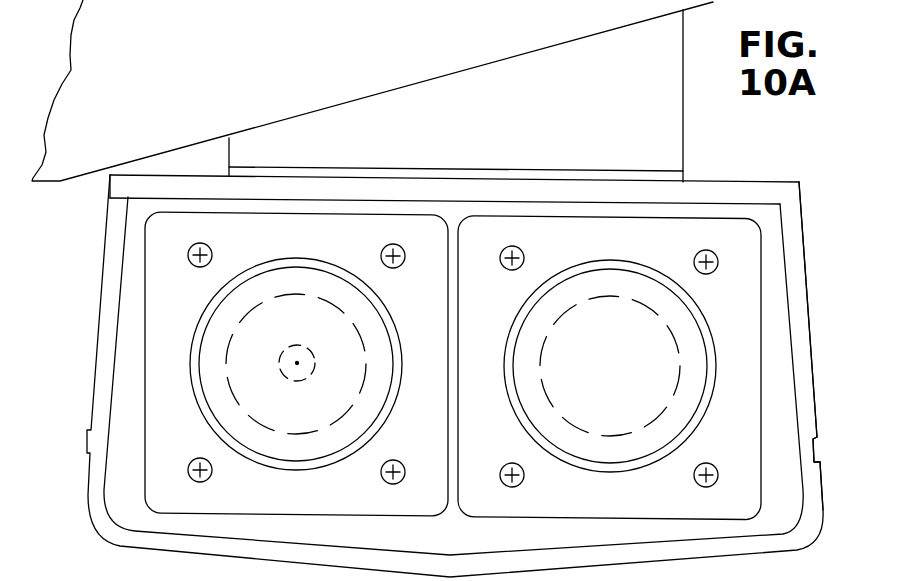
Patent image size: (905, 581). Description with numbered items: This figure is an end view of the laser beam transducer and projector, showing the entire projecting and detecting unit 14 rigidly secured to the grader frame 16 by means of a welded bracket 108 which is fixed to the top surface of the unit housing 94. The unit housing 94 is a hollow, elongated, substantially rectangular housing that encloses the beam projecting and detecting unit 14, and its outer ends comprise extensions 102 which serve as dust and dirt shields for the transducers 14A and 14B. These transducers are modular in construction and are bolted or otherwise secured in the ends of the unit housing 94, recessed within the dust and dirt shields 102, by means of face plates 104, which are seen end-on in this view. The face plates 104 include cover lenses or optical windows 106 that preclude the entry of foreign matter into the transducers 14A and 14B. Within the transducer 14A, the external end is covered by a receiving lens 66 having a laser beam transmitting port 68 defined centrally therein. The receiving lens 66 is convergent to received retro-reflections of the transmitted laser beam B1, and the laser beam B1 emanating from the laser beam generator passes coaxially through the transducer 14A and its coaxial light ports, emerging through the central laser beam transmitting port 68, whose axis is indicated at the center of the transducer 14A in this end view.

The grader frame 16 is at (330, 50).
The welded bracket 108 is at (475, 140).
The unit housing 94 is at (806, 265).
The projecting and detecting unit 14 is at (829, 449).
The extensions 102 is at (352, 540).
The face plates 104 is at (743, 322).
The cover lenses or optical windows 106 is at (203, 405).
The projecting and detecting transducer 14A is at (277, 442).
The transducer 14B is at (604, 452).
The receiving lens 66 is at (252, 416).
The laser beam transmitting port 68 is at (283, 373).
The laser beam B1 is at (298, 362).